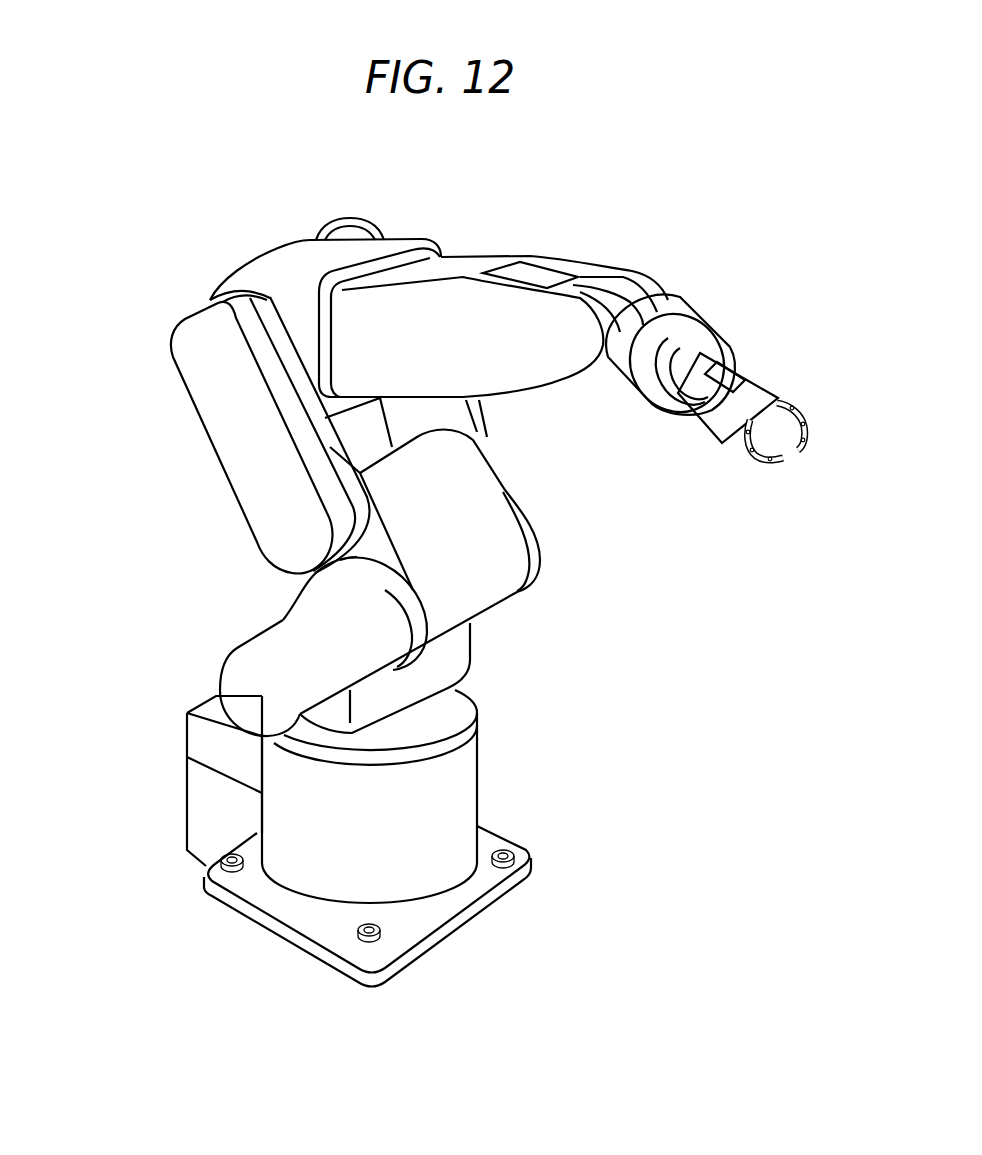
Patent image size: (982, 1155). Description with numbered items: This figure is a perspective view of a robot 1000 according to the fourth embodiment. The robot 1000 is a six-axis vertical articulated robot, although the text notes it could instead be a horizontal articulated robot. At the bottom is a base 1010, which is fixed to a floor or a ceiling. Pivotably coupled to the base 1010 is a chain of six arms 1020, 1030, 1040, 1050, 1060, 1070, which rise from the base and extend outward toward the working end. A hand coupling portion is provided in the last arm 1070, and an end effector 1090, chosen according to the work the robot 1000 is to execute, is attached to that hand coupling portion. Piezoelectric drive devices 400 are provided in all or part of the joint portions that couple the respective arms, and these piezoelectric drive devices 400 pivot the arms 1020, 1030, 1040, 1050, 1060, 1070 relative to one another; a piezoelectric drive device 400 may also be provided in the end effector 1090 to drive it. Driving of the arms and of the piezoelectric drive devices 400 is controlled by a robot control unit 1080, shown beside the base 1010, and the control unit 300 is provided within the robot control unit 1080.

The robot 1000 is at (576, 197).
The base 1010 is at (318, 875).
The arm 1020 is at (243, 678).
The arm 1030 is at (437, 567).
The arm 1040 is at (265, 270).
The arm 1050 is at (460, 304).
The arm 1060 is at (667, 305).
The arm 1070 is at (648, 385).
The robot control unit 1080 is at (187, 752).
The end effector 1090 is at (778, 460).
The control unit 300 is at (203, 808).
The piezoelectric drive device 400 is at (477, 588).